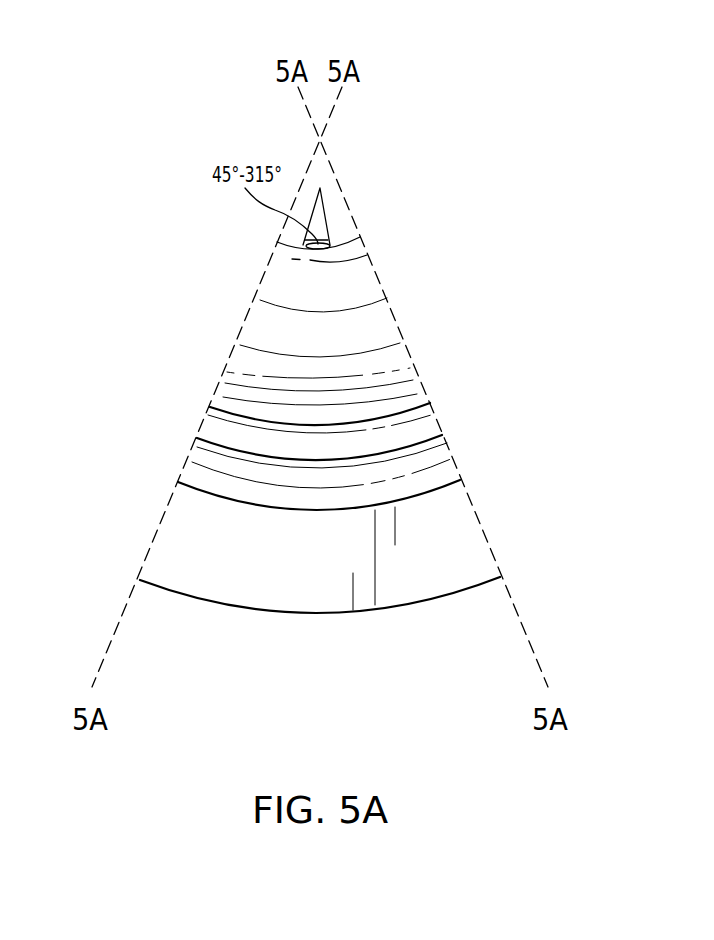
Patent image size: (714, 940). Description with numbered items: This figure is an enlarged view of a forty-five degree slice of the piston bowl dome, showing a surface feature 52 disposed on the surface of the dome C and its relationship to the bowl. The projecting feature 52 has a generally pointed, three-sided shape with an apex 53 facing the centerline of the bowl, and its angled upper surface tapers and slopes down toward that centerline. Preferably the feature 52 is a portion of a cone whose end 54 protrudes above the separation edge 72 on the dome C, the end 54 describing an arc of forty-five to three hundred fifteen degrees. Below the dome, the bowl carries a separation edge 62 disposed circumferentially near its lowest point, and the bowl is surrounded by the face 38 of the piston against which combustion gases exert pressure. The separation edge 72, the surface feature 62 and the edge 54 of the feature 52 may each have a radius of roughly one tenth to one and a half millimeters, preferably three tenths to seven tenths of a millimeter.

The face 38 is at (305, 566).
The surface feature 52 is at (322, 232).
The apex 53 is at (320, 188).
The end 54 is at (327, 247).
The separation edge 62 is at (222, 410).
The separation edge 72 is at (360, 240).
The domed surface C is at (346, 139).